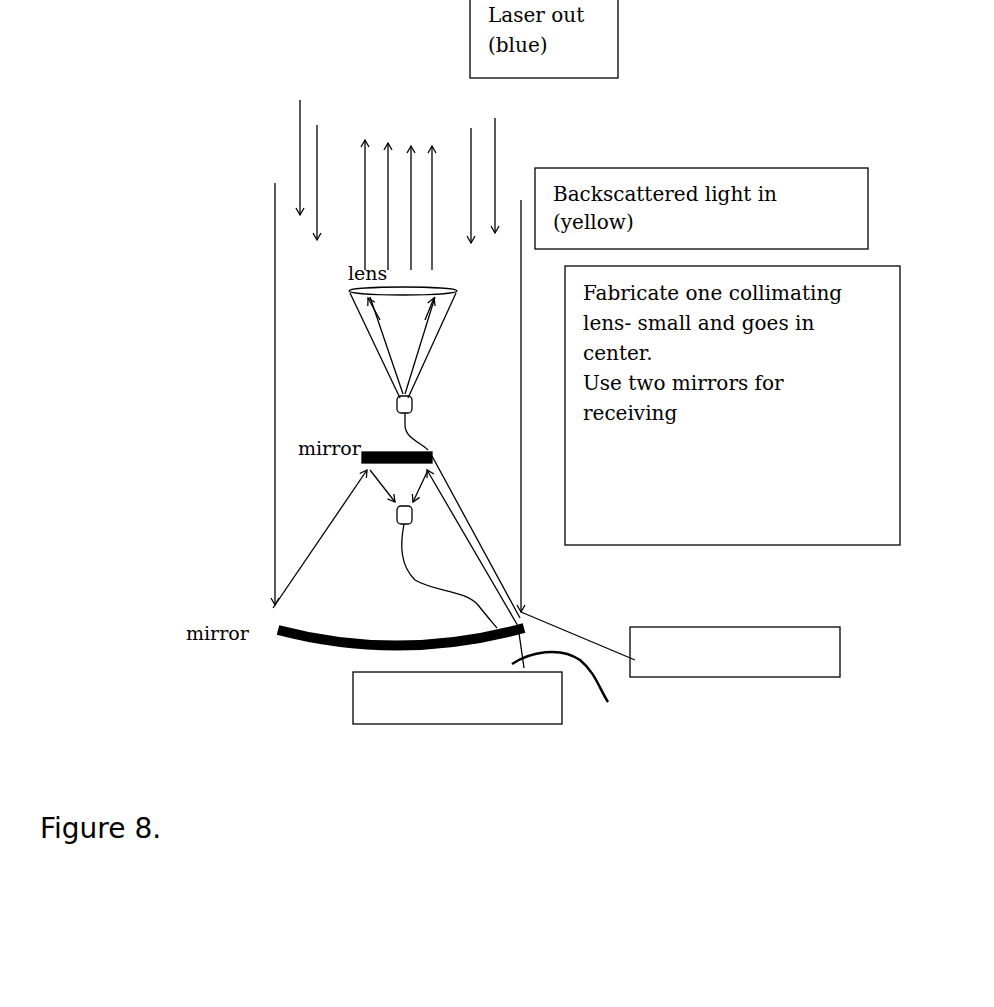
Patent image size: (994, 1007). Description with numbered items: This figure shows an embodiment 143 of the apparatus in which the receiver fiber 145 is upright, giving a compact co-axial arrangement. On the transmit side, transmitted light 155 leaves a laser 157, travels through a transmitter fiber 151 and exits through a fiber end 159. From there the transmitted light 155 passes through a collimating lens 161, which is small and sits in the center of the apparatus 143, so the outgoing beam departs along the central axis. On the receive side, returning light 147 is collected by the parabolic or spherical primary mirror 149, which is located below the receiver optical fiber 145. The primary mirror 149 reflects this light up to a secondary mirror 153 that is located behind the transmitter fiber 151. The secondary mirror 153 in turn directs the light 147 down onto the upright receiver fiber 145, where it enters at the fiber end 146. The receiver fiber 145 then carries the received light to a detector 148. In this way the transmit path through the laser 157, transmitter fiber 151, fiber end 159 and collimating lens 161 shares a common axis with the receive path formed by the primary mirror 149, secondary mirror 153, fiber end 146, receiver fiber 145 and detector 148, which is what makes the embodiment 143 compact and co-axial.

The embodiment 143 is at (449, 808).
The receiver fiber 145 is at (588, 694).
The fiber end 146 is at (395, 517).
The light 147 is at (275, 529).
The detector 148 is at (528, 724).
The primary mirror 149 is at (288, 640).
The transmitter fiber 151 is at (562, 622).
The secondary mirror 153 is at (372, 452).
The transmitted light 155 is at (432, 180).
The laser 157 is at (777, 677).
The fiber end 159 is at (395, 402).
The collimating lens 161 is at (348, 292).